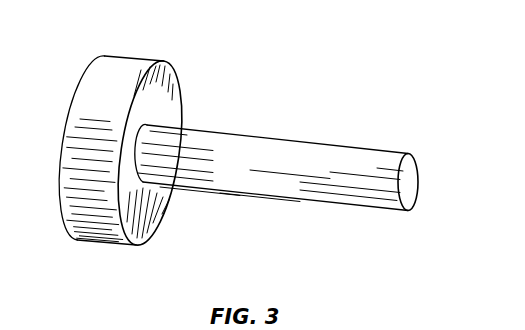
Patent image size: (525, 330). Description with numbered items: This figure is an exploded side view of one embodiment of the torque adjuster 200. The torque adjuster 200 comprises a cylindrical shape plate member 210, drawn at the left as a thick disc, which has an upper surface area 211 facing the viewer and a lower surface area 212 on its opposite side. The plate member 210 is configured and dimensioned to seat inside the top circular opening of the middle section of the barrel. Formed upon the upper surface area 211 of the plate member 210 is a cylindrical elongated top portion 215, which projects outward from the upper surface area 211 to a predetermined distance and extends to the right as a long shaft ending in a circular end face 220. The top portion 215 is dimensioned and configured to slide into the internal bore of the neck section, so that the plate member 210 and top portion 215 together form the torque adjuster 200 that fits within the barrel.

The torque adjuster 200 is at (250, 136).
The plate member 210 is at (127, 138).
The upper surface area 211 is at (163, 92).
The lower surface area 212 is at (88, 207).
The top portion 215 is at (310, 167).
The shaft end 220 is at (413, 182).